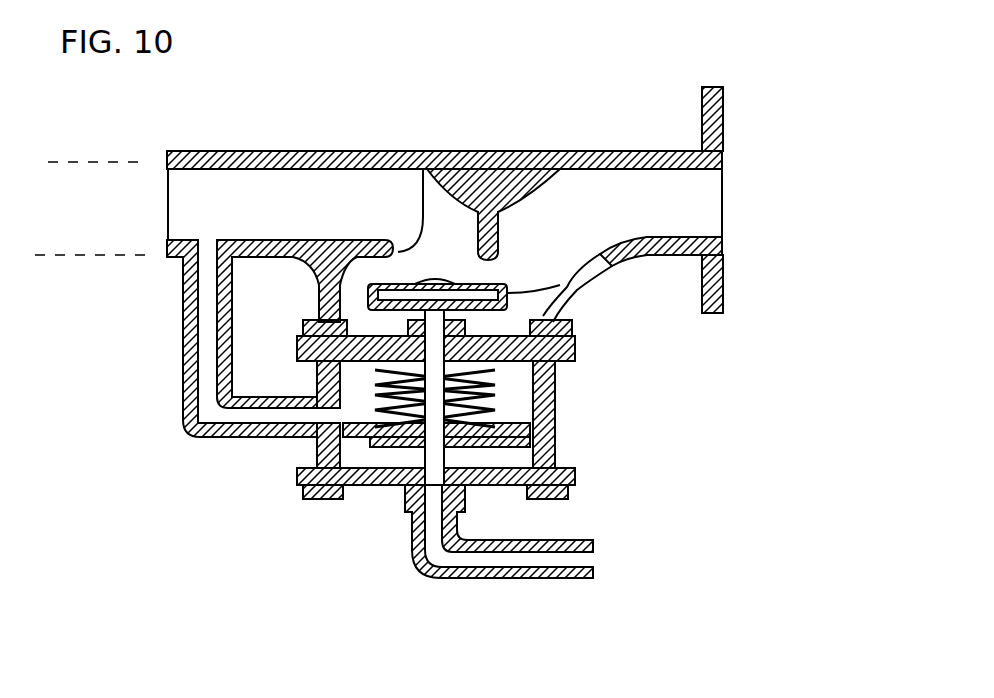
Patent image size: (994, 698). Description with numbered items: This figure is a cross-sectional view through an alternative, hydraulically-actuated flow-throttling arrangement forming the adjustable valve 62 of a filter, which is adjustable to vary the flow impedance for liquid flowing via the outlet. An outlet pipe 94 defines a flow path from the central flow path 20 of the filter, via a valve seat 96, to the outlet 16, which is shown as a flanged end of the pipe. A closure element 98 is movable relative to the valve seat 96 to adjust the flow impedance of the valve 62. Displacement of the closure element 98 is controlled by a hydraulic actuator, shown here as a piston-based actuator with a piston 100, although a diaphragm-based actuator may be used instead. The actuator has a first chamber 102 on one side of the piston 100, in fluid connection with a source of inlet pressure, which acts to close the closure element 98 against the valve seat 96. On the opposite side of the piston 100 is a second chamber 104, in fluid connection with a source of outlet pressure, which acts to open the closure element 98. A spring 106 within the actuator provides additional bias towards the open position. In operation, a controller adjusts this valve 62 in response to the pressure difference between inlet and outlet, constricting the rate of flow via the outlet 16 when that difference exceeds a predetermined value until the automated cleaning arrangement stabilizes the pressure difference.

The outlet 16 is at (727, 117).
The central flow path 20 is at (150, 214).
The adjustable valve 62 is at (473, 313).
The outlet pipe 94 is at (168, 155).
The valve seat 96 is at (423, 170).
The closure element 98 is at (573, 292).
The piston 100 is at (557, 418).
The first chamber 102 is at (553, 450).
The second chamber 104 is at (355, 410).
The spring 106 is at (557, 385).